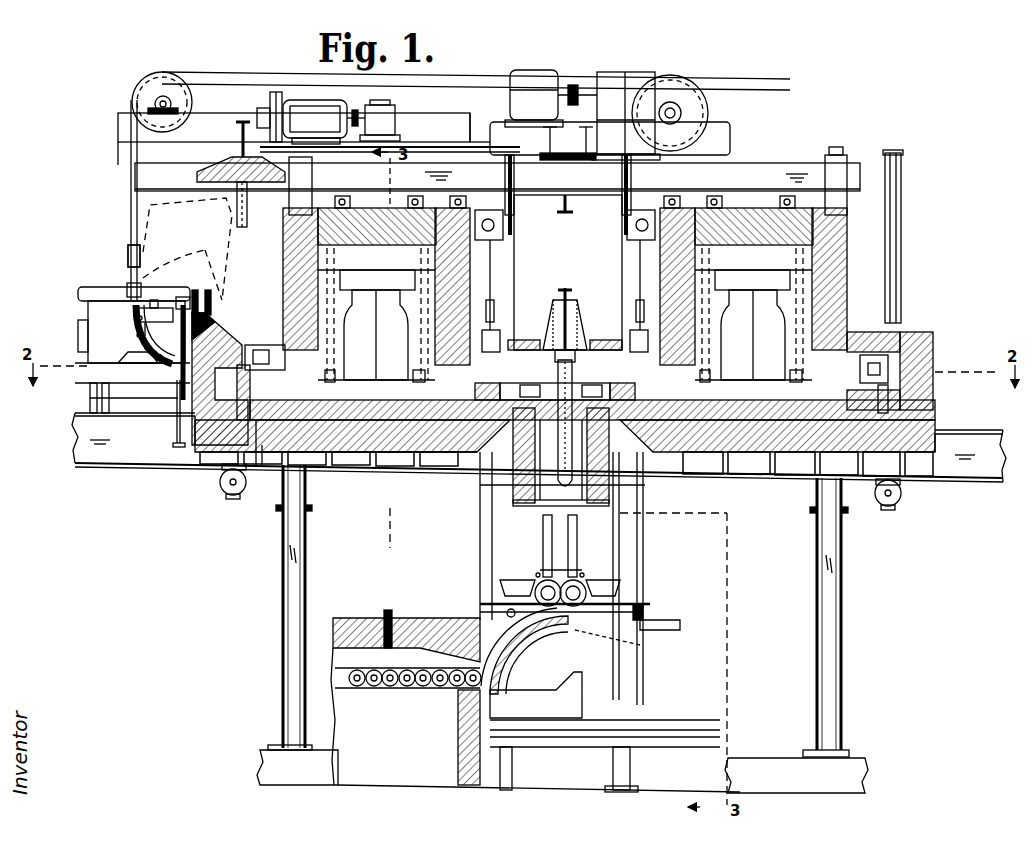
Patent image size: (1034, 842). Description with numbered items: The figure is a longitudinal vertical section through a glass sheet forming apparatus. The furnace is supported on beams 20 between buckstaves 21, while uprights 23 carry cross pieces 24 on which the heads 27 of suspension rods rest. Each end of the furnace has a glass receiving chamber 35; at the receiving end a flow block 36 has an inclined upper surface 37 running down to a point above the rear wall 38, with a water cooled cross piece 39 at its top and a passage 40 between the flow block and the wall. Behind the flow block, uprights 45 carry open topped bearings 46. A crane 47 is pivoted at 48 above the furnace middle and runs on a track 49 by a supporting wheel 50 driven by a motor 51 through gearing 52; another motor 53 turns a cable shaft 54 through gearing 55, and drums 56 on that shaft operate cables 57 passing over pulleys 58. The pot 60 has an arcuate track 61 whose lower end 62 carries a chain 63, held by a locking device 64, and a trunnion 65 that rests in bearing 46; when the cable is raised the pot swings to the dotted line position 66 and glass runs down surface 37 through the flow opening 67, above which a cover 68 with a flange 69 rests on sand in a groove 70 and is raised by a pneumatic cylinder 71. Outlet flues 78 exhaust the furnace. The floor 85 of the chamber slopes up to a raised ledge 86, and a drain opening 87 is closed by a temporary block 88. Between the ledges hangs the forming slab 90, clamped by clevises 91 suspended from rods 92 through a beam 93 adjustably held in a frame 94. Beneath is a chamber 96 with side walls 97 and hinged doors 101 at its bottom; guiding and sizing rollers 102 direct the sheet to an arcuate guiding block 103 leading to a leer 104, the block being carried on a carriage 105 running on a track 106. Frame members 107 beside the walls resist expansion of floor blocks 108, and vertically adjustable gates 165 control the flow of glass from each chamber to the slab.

The beams 20 is at (305, 481).
The buckstaves 21 is at (350, 203).
The uprights 23 is at (290, 612).
The cross pieces 24 is at (312, 179).
The heads 27 is at (840, 160).
The glass receiving chamber 35 is at (373, 402).
The flow block 36 is at (162, 416).
The inclined upper surface 37 is at (232, 335).
The rear wall 38 is at (250, 389).
The water cooled cross piece 39 is at (200, 312).
The passage 40 is at (232, 408).
The uprights 45 is at (181, 386).
The open topped bearings 46 is at (158, 337).
The crane 47 is at (450, 138).
The pivot 48 is at (553, 150).
The track 49 is at (318, 161).
The supporting wheel 50 is at (277, 92).
The motor 51 is at (385, 115).
The gearing 52 is at (320, 112).
The motor 53 is at (522, 80).
The cable shaft 54 is at (674, 110).
The gearing 55 is at (640, 85).
The drums 56 is at (704, 100).
The cable 57 is at (228, 77).
The pulley 58 is at (194, 105).
The pot 60 is at (107, 327).
The arcuate track 61 is at (136, 339).
The lower end 62 is at (140, 366).
The chain 63 is at (131, 290).
The locking device 64 is at (163, 308).
The trunnion 65 is at (185, 297).
The dotted line position 66 is at (150, 196).
The flow opening 67 is at (256, 340).
The cover 68 is at (222, 165).
The flange 69 is at (283, 184).
The groove 70 is at (286, 320).
The pneumatic cylinder 71 is at (229, 494).
The outlet flues 78 is at (325, 377).
The floor 85 is at (470, 440).
The raised ledge 86 is at (548, 392).
The opening 87 is at (272, 435).
The temporary block 88 is at (258, 420).
The forming slab 90 is at (574, 398).
The clevises 91 is at (636, 384).
The rods 92 is at (580, 346).
The beam 93 is at (575, 330).
The frame 94 is at (552, 340).
The chamber 96 is at (513, 478).
The side walls 97 is at (609, 486).
The hinged doors 101 is at (543, 508).
The guiding and sizing rollers 102 is at (536, 588).
The arcuate guiding block 103 is at (562, 640).
The leer 104 is at (472, 690).
The carriage 105 is at (568, 697).
The track 106 is at (660, 723).
The frame members 107 is at (490, 428).
The floor blocks 108 is at (497, 386).
The gates 165 is at (497, 333).